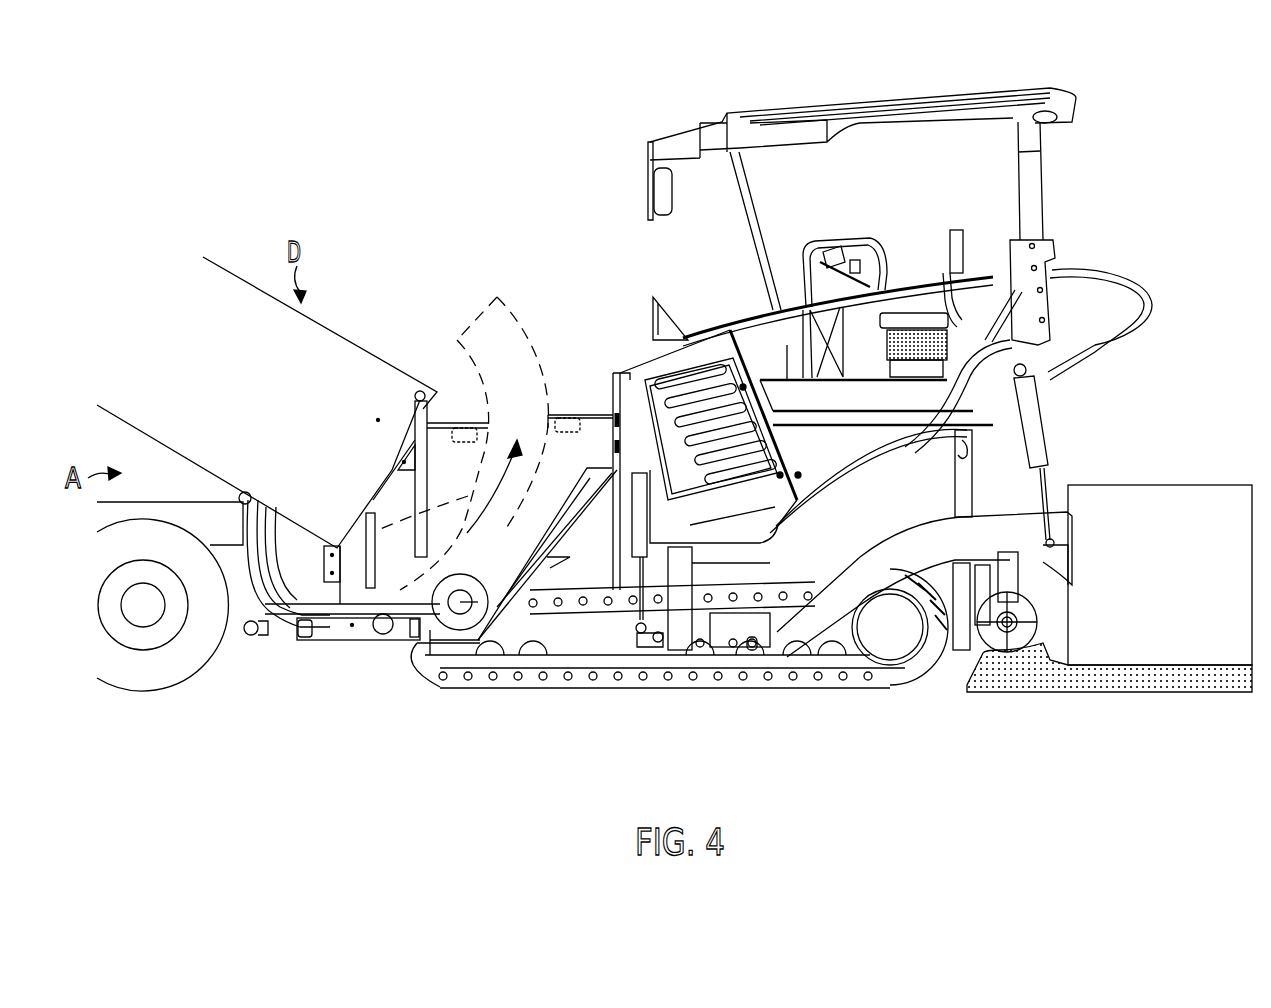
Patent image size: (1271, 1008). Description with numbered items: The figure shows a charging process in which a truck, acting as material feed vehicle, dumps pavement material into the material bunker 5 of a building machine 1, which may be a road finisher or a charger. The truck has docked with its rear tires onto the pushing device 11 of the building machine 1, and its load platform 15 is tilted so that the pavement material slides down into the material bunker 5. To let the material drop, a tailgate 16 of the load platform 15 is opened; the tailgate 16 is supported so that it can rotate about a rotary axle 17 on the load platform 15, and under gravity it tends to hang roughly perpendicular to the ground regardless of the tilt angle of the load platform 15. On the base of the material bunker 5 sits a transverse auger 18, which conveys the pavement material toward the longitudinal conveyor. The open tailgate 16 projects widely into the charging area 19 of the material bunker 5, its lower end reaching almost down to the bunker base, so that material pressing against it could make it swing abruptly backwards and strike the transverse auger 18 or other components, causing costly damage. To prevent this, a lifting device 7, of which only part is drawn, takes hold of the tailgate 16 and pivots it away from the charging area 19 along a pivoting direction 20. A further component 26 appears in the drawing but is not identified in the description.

The building machine 1 is at (613, 207).
The material bunker 5 is at (592, 398).
The lifting device 7 is at (372, 567).
The pushing device 11 is at (250, 636).
The load platform 15 is at (337, 357).
The tailgate 16 is at (412, 542).
The rotary axle 17 is at (419, 388).
The transverse auger 18 is at (460, 622).
The charging area 19 is at (530, 547).
The pivoting direction 20 is at (500, 490).
The bracket 26 is at (398, 585).